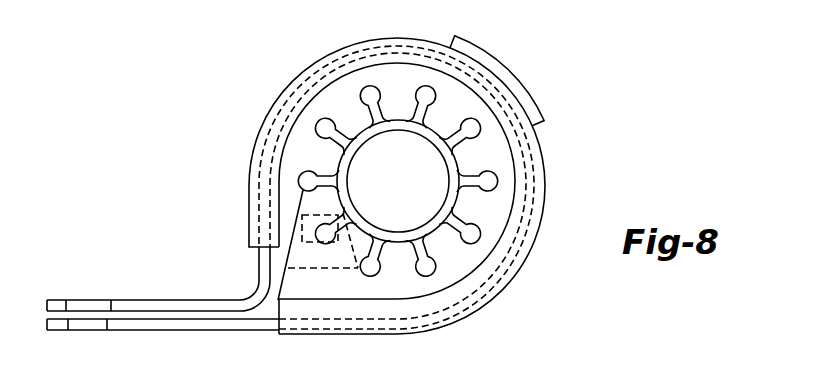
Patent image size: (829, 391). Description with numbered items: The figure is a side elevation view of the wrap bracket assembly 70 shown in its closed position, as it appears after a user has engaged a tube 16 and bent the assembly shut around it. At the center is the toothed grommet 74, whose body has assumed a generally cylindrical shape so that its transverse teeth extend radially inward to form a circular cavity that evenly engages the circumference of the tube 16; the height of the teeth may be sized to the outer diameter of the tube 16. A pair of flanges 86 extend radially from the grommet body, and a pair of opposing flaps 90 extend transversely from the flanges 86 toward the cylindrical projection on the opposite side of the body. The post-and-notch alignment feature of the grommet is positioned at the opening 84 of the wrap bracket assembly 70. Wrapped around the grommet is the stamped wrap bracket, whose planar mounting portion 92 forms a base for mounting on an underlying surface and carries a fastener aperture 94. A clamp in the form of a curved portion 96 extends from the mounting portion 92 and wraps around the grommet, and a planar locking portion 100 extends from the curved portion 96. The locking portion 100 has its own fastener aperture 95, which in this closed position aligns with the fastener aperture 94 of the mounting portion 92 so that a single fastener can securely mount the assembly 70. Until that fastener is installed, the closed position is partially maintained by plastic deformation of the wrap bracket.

The wrap bracket assembly 70 is at (250, 77).
The toothed grommet 74 is at (350, 107).
The tube 16 is at (460, 195).
The flaps 90 is at (528, 90).
The curved portion 96 is at (537, 179).
The flanges 86 is at (508, 245).
The opening 84 is at (331, 273).
The mounting portion 92 is at (182, 330).
The fastener aperture 94 is at (68, 322).
The fastener aperture 95 is at (82, 298).
The locking portion 100 is at (147, 297).